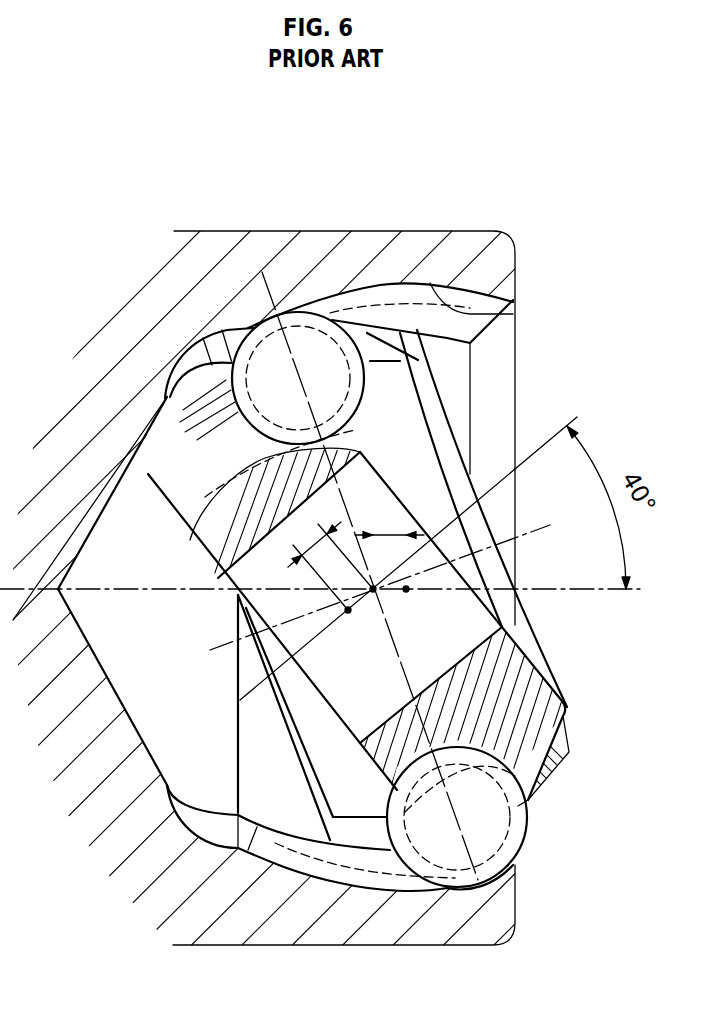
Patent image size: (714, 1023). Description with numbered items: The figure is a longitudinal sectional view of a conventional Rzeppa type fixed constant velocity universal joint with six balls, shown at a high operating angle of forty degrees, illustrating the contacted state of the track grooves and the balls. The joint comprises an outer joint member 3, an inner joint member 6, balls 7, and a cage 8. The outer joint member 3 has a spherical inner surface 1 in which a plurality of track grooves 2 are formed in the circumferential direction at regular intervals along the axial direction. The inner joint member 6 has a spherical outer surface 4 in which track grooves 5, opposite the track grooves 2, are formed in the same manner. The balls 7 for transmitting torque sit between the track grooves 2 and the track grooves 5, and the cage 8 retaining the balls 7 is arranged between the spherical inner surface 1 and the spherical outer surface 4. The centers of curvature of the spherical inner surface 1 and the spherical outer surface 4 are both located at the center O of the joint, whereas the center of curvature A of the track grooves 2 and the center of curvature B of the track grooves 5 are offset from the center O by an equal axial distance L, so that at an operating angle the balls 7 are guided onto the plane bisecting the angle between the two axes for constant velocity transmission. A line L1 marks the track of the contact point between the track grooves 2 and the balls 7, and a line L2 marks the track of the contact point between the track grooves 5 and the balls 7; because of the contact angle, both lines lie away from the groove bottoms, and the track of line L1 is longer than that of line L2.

The spherical inner surface 1 is at (446, 342).
The track grooves 2 is at (513, 314).
The outer joint member 3 is at (461, 232).
The spherical outer surface 4 is at (551, 785).
The track grooves 5 is at (490, 700).
The inner joint member 6 is at (506, 629).
The balls 7 is at (320, 362).
The cage 8 is at (582, 751).
The line L1 is at (386, 293).
The line L2 is at (195, 529).
The distance L is at (356, 558).
The center of the joint O is at (373, 528).
The center of curvature A is at (406, 528).
The center of curvature B is at (348, 610).